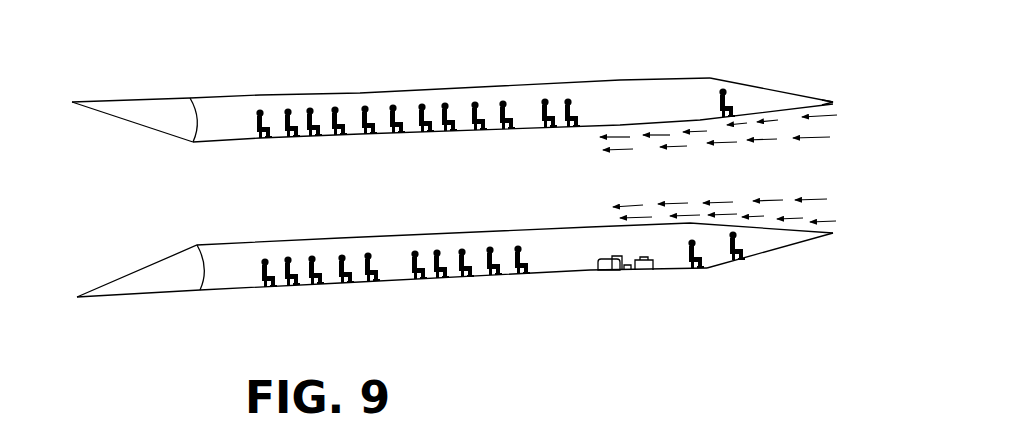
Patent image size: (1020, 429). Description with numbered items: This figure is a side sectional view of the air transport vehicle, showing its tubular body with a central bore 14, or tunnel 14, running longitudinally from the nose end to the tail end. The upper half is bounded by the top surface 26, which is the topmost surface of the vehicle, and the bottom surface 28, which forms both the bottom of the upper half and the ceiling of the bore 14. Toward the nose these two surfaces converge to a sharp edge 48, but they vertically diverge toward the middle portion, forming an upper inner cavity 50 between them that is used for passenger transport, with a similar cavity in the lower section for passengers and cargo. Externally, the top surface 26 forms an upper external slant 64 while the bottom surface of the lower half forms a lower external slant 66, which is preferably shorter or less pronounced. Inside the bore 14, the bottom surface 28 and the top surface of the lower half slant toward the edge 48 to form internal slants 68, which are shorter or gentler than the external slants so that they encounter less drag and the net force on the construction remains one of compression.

The central bore 14 is at (220, 193).
The top surface of the upper half 26 is at (673, 77).
The bottom surface of the upper half 28 is at (382, 132).
The sharp edge 48 is at (833, 102).
The upper inner cavity 50 is at (522, 97).
The upper external slant 64 is at (755, 85).
The lower external slant 66 is at (772, 252).
The internal slants 68 is at (772, 108).